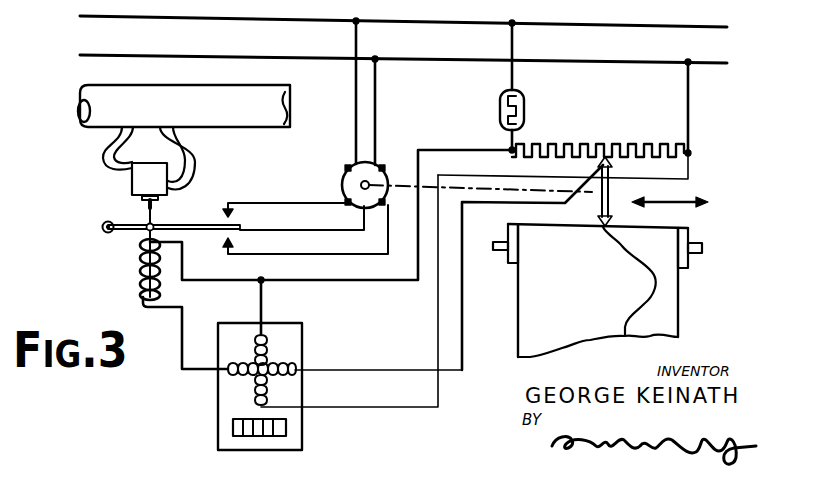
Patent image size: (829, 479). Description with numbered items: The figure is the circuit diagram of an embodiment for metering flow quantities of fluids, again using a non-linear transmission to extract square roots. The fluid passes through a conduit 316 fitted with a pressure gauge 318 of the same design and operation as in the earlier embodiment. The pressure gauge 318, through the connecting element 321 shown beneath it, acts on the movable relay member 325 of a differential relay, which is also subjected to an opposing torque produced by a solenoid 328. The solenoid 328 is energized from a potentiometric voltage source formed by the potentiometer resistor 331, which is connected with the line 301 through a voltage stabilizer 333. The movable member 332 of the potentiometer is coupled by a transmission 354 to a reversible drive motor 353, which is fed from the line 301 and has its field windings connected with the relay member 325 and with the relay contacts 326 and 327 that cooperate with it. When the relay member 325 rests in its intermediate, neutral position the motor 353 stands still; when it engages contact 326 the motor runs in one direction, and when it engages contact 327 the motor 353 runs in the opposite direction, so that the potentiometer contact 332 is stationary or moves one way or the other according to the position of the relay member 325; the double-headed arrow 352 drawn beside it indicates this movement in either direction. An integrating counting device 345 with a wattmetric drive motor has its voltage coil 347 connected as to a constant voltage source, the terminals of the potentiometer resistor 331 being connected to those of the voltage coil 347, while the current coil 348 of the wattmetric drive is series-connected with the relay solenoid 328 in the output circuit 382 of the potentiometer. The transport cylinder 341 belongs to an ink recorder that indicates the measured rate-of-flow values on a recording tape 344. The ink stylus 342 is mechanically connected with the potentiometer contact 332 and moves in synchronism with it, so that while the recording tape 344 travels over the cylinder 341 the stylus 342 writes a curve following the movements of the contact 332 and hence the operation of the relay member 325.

The line 301 is at (207, 55).
The conduit 316 is at (204, 96).
The pressure gauge 318 is at (145, 177).
The connecting stem 321 is at (140, 208).
The movable relay member 325 is at (220, 233).
The relay contact 326 is at (236, 215).
The relay contact 327 is at (236, 242).
The solenoid 328 is at (140, 272).
The potentiometer resistor 331 is at (611, 147).
The movable member of the potentiometer 332 is at (608, 166).
The voltage stabilizer 333 is at (524, 102).
The transport cylinder 341 is at (688, 260).
The ink stylus 342 is at (609, 219).
The recording tape 344 is at (672, 312).
The integrating counting device 345 is at (293, 437).
The voltage coil 347 is at (268, 352).
The current coil 348 is at (285, 376).
The direction arrow 352 is at (676, 202).
The reversible drive motor 353 is at (363, 172).
The transmission 354 is at (450, 187).
The output circuit 382 is at (462, 362).